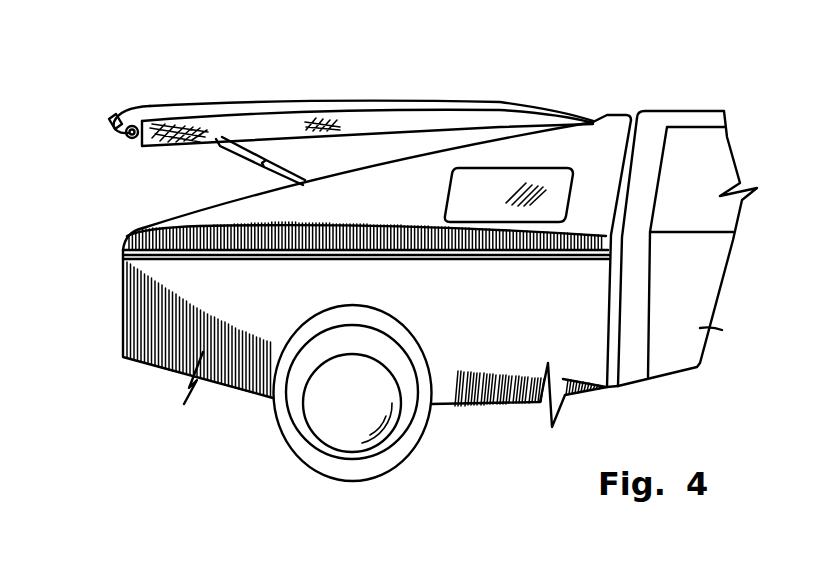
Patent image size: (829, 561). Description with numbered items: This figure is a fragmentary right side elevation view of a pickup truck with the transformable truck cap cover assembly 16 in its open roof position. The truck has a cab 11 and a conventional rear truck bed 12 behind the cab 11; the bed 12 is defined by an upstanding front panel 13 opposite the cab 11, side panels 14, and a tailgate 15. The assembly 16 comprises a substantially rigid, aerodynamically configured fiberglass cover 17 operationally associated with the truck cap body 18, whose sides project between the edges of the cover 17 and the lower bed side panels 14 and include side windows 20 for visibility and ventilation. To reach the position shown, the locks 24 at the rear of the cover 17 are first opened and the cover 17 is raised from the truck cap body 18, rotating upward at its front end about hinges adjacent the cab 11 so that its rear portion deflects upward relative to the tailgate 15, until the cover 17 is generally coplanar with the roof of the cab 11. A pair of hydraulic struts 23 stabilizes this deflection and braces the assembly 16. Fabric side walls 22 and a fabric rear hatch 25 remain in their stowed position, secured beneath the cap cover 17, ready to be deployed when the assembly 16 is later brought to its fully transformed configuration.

The cab 11 is at (665, 109).
The truck bed 12 is at (440, 306).
The front panel 13 is at (612, 366).
The side panels 14 is at (175, 330).
The tailgate 15 is at (123, 312).
The transformable truck cap cover assembly 16 is at (289, 74).
The cover 17 is at (195, 104).
The truck cap body 18 is at (622, 114).
The side windows 20 is at (478, 177).
The fabric side walls 22 is at (177, 150).
The hydraulic struts 23 is at (241, 152).
The locks 24 is at (111, 118).
The fabric rear hatch 25 is at (125, 138).